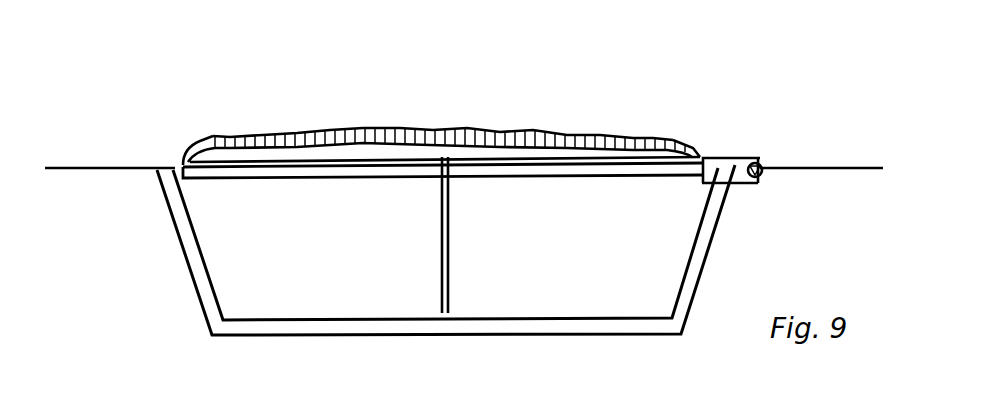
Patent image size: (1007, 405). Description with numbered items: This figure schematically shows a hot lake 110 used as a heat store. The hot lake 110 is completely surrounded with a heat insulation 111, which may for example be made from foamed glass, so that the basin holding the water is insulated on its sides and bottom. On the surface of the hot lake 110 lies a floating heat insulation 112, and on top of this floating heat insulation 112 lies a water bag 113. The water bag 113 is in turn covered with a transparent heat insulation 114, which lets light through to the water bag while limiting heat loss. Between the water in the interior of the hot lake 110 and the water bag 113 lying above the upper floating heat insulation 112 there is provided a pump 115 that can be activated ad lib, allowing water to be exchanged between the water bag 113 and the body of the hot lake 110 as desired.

The hot lake 110 is at (583, 302).
The heat insulation 111 is at (248, 172).
The floating heat insulation 112 is at (420, 163).
The water bag 113 is at (623, 158).
The transparent heat insulation 114 is at (227, 147).
The pump 115 is at (765, 160).